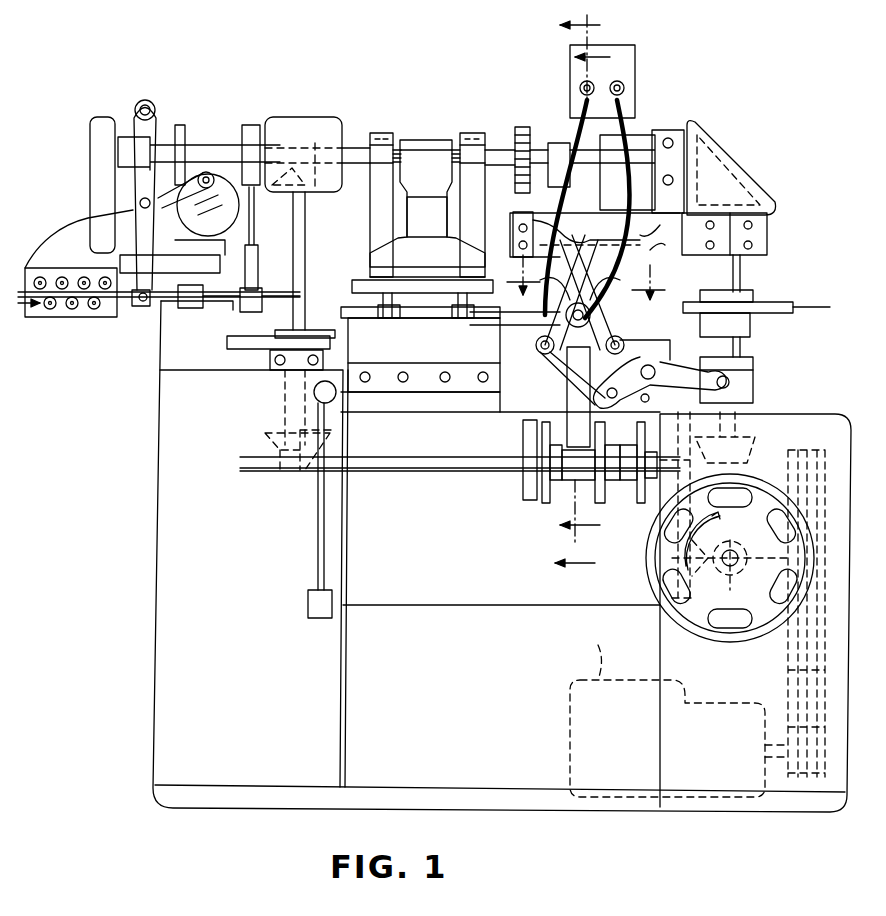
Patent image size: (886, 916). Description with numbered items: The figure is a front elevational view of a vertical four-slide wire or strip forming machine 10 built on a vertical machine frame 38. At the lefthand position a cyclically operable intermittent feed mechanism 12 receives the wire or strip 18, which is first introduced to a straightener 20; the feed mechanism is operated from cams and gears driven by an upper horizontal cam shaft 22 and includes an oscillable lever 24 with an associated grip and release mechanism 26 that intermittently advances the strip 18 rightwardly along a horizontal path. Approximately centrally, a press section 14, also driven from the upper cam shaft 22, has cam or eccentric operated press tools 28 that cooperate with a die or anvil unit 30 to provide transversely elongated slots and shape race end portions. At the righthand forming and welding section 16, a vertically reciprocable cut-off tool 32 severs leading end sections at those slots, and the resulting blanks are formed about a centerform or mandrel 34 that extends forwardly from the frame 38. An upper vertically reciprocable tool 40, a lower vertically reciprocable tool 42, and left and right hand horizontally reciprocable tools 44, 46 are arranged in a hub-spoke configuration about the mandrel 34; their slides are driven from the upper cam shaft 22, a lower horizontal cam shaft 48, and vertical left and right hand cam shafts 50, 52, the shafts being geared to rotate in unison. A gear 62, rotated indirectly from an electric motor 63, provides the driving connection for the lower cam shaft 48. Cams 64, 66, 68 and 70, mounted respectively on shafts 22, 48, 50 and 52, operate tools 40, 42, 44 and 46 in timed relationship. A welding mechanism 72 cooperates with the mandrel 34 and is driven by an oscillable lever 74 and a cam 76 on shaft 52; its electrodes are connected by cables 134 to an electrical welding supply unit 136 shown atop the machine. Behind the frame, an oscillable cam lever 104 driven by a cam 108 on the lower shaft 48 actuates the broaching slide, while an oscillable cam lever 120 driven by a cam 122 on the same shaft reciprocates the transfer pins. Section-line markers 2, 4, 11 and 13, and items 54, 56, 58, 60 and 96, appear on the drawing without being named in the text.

The vertical four-slide machine 10 is at (109, 506).
The intermittent feed mechanism 12 is at (64, 142).
The straightener 20 is at (62, 318).
The upper horizontal cam shaft 22 is at (210, 150).
The oscillable lever 24 is at (179, 203).
The grip and release mechanism 26 is at (155, 308).
The wire or strip 18 is at (205, 308).
The cam 68 is at (228, 342).
The left hand vertical cam shaft 50 is at (306, 250).
The housing 56 is at (325, 118).
The press section 14 is at (430, 120).
The press tools 28 is at (400, 285).
The die or anvil unit 30 is at (420, 359).
The section line 13 is at (472, 135).
The gear 96 is at (556, 120).
The cables 134 is at (575, 95).
The section line 4 is at (586, 281).
The section line 11 is at (593, 313).
The electrical welding supply unit 136 is at (632, 100).
The forming and welding section 16 is at (707, 77).
The cam 64 is at (665, 130).
The guide 58 is at (745, 165).
The upper vertically reciprocable tool 40 is at (660, 228).
The cam 76 is at (768, 392).
The cut-off tool 32 is at (512, 234).
The centerform or mandrel 34 is at (533, 250).
The section line 2 is at (586, 277).
The vertical machine frame 38 is at (730, 278).
The right hand vertical cam shaft 52 is at (753, 303).
The cam 70 is at (800, 307).
The right hand horizontally reciprocable tool 46 is at (725, 335).
The oscillable lever 74 is at (752, 365).
The left hand horizontally reciprocable tool 44 is at (540, 330).
The lower vertically reciprocable tool 42 is at (565, 368).
The welding mechanism 72 is at (661, 372).
The motor mount 60 is at (748, 445).
The gear 62 is at (742, 478).
The lower horizontal cam shaft 48 is at (400, 470).
The oscillable cam lever 104 is at (520, 448).
The cam 108 is at (540, 505).
The cam 66 is at (560, 495).
The oscillable cam lever 120 is at (625, 495).
The cam 122 is at (642, 505).
The hand lever 54 is at (300, 460).
The electric motor 63 is at (679, 712).